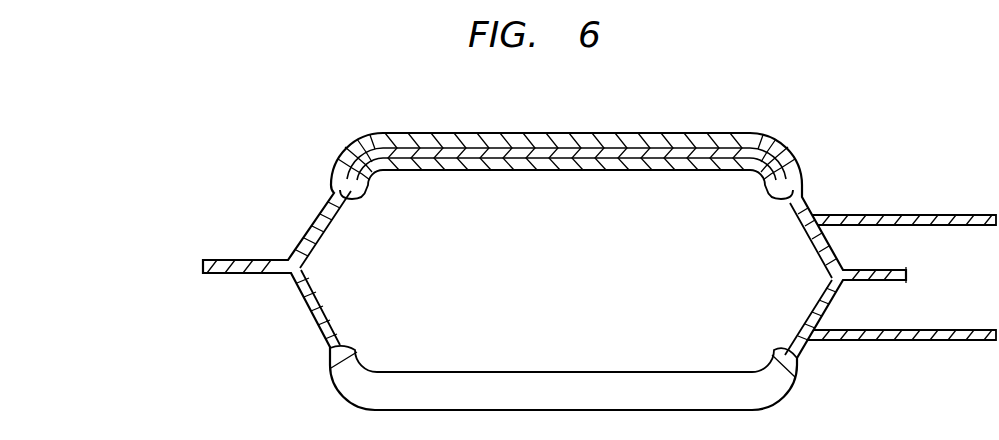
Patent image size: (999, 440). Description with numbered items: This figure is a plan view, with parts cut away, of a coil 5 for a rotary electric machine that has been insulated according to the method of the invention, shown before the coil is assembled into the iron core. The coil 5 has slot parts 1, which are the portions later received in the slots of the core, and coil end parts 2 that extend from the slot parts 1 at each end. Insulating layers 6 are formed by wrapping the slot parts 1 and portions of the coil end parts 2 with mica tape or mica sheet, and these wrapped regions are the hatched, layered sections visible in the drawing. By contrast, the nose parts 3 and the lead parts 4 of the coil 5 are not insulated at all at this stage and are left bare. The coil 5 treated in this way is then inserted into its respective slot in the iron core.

The slot parts 1 is at (512, 148).
The coil end parts 2 is at (323, 207).
The nose parts 3 is at (225, 262).
The lead parts 4 is at (963, 215).
The coil 5 is at (588, 160).
The insulating layers 6 is at (662, 140).